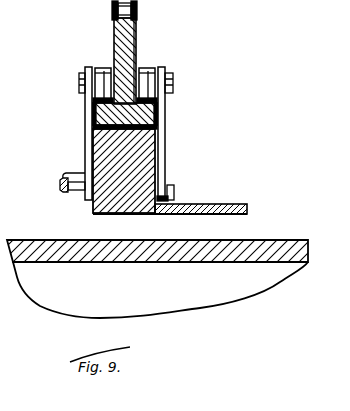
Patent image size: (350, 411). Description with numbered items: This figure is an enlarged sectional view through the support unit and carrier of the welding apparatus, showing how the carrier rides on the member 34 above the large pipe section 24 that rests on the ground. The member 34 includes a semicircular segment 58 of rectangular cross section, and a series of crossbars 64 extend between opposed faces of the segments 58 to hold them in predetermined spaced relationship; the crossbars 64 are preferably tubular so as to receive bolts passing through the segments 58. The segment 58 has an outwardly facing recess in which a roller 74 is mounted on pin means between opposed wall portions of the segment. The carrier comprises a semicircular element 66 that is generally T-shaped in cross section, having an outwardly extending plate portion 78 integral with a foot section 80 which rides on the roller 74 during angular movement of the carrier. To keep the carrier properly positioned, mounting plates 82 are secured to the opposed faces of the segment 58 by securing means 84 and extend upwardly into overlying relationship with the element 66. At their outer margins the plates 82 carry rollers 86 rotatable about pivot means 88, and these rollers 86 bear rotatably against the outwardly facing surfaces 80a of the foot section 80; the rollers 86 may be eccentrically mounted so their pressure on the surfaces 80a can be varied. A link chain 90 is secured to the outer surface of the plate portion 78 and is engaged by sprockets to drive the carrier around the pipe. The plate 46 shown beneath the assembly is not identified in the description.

The link chain 90 is at (138, 11).
The semicircular element 66 is at (113, 52).
The plate portion 78 is at (137, 58).
The foot section 80 is at (158, 117).
The outwardly facing surface 80a is at (159, 108).
The roller 74 is at (158, 127).
The semicircular segment 58 is at (124, 214).
The mounting plate 82 is at (164, 158).
The roller 86 is at (106, 66).
The pivot means 88 is at (173, 83).
The securing means 84 is at (176, 182).
The member 34 is at (201, 203).
The crossbar 64 is at (68, 192).
The ground plate 46 is at (262, 240).
The pipe section 24 is at (141, 250).